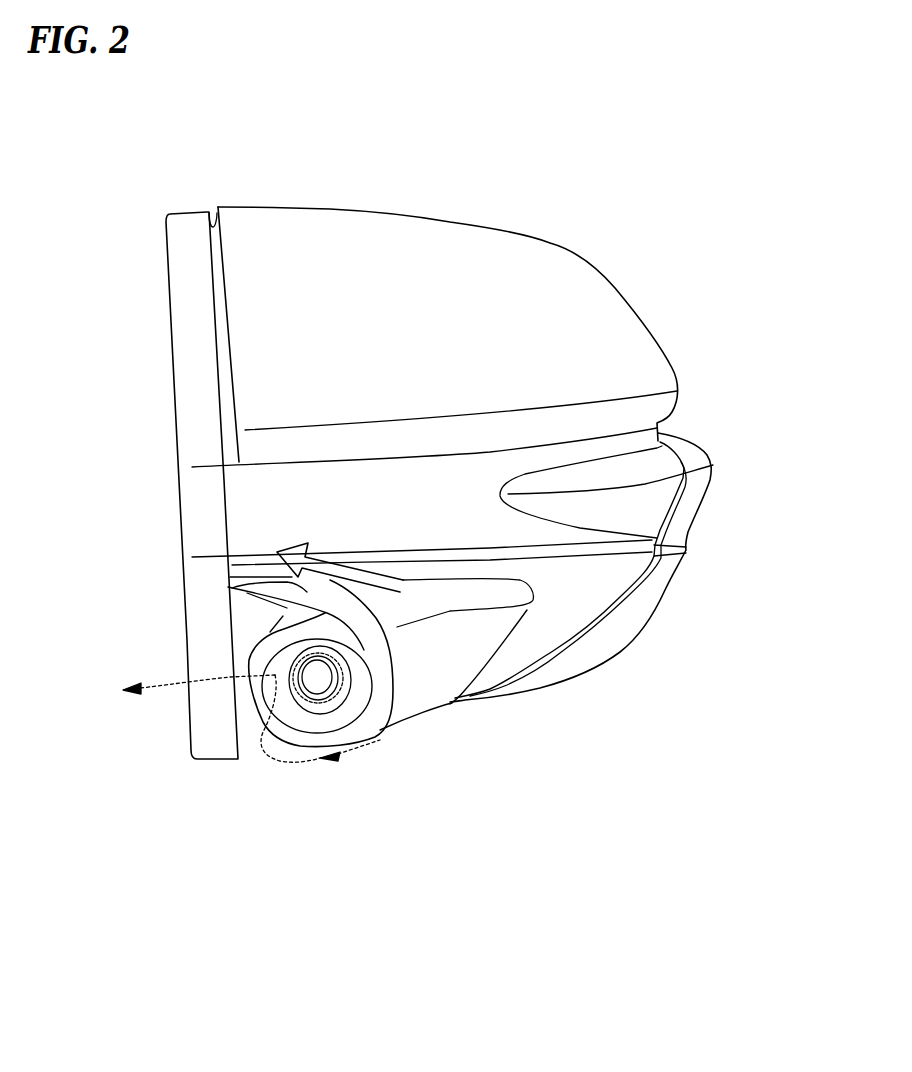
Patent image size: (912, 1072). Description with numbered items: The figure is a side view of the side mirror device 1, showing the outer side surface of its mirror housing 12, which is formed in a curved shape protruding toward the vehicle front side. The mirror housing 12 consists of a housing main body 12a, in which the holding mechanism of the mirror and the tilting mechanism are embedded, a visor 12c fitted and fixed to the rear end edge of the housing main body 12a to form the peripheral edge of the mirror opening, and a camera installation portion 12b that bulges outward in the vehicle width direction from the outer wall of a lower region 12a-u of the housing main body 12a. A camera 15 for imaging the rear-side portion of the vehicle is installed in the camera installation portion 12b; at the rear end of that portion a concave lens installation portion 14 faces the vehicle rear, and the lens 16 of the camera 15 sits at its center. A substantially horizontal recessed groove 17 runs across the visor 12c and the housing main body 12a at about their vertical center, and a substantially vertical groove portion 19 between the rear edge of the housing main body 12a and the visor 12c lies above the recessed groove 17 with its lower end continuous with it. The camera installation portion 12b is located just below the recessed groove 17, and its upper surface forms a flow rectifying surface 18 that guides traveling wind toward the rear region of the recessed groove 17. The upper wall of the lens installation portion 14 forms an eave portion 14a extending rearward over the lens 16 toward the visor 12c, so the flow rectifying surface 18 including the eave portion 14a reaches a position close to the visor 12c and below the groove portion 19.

The side mirror device 1 is at (587, 233).
The mirror housing 12 is at (673, 366).
The housing main body 12a is at (608, 312).
The camera installation portion 12b is at (460, 680).
The visor 12c is at (179, 342).
The lower region of the housing main body 12a-u is at (477, 568).
The lens installation portion 14 is at (270, 632).
The eave portion 14a is at (232, 588).
The camera 15 is at (310, 713).
The lens 16 is at (317, 677).
The recessed groove 17 is at (243, 551).
The flow rectifying surface 18 is at (413, 600).
The groove portion 19 is at (216, 211).